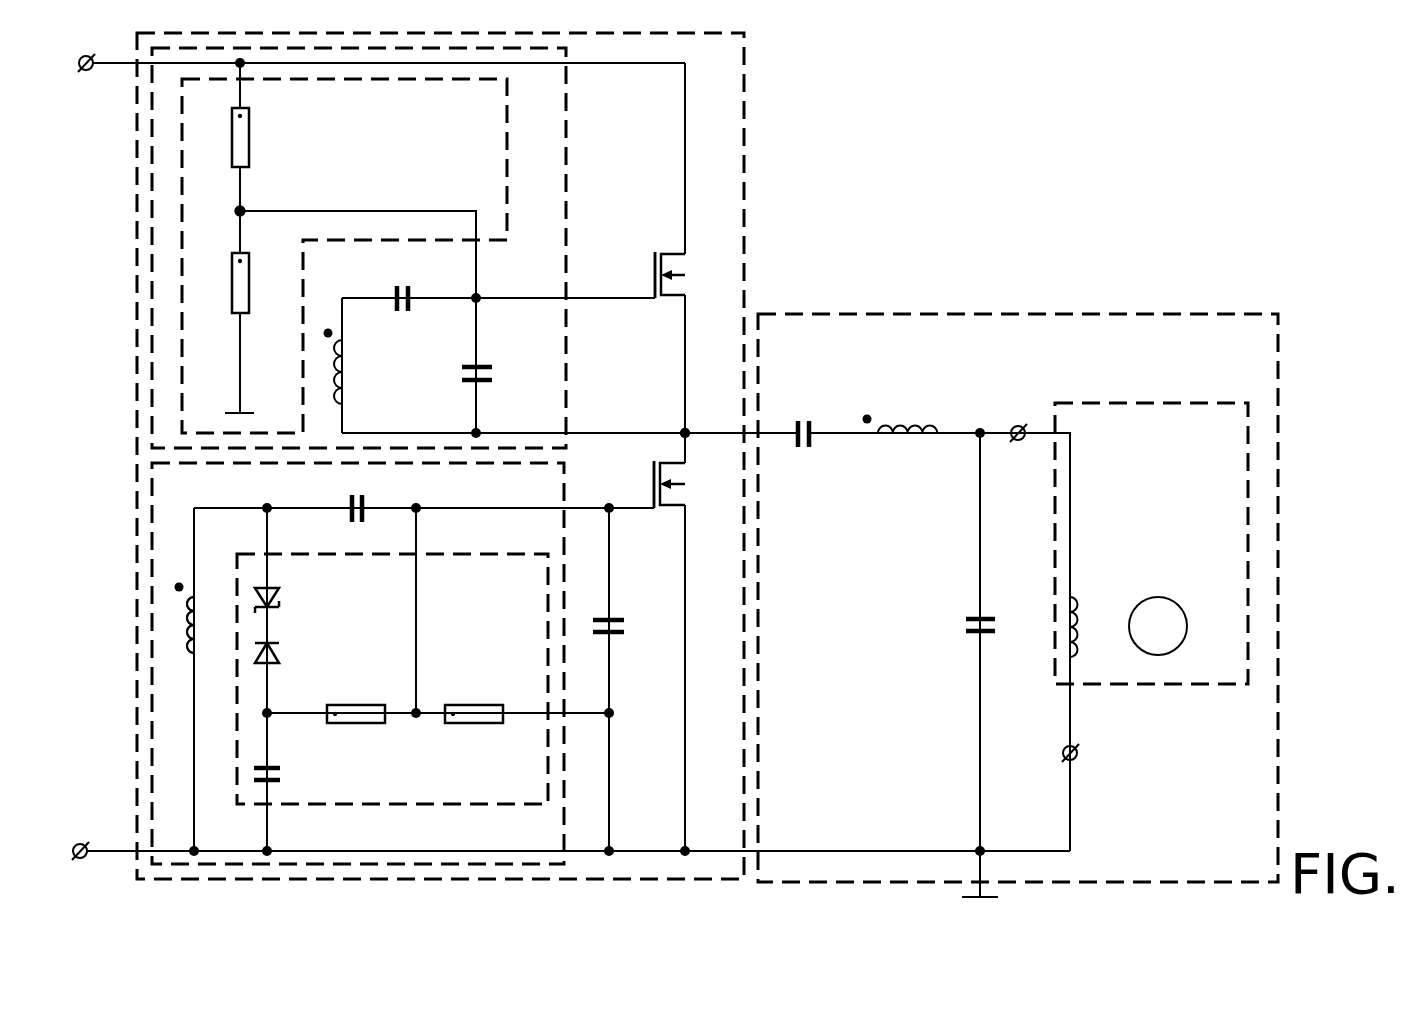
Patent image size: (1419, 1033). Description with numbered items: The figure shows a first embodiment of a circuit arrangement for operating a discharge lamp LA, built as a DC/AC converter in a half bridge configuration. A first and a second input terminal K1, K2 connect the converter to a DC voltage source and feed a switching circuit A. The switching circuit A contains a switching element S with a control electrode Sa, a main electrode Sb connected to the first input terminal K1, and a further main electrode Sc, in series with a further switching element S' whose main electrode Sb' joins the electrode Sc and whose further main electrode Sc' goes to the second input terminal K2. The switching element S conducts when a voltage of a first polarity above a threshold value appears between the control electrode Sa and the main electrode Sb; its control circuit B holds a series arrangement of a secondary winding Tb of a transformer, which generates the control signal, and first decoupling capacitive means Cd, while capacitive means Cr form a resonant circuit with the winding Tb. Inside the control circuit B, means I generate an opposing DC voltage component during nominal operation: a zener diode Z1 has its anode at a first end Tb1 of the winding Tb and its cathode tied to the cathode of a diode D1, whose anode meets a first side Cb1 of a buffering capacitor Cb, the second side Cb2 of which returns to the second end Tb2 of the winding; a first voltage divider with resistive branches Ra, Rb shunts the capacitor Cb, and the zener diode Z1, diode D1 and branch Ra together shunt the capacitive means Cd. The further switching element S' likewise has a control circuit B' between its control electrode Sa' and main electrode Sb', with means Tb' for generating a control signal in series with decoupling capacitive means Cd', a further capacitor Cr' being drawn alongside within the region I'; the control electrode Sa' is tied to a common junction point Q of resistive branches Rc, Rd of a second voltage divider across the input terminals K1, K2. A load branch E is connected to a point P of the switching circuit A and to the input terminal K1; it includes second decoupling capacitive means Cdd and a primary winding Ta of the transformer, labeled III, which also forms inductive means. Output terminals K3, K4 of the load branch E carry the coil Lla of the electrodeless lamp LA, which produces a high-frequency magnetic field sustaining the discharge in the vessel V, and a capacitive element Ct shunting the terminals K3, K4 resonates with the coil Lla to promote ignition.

The switching circuit A is at (747, 158).
The control circuit B' is at (325, 248).
The upper control circuit I' is at (298, 256).
The control circuit B is at (323, 663).
The means for generating a DC voltage component I is at (392, 659).
The load branch E is at (1033, 313).
The discharge lamp LA is at (1152, 402).
The second input terminal K2 is at (84, 74).
The first input terminal K1 is at (78, 840).
The output terminal K4 is at (1019, 425).
The output terminal K3 is at (1078, 754).
The first resistive branch of second voltage divider Rc is at (250, 131).
The second resistive branch of second voltage divider Rd is at (250, 281).
The first resistive branch of first voltage divider Ra is at (358, 704).
The second resistive branch of first voltage divider Rb is at (458, 704).
The common junction point Q is at (245, 208).
The first decoupling capacitive means Cd' is at (402, 328).
The capacitor Cr' is at (499, 381).
The first decoupling capacitive means Cd is at (328, 497).
The capacitive means Cr is at (631, 632).
The buffering capacitive element Cb is at (282, 774).
The first side of capacitor Cb1 is at (270, 736).
The second side of capacitor Cb2 is at (265, 829).
The second decoupling capacitive means Cdd is at (802, 418).
The capacitive element Ct is at (963, 623).
The means for generating a control signal Tb' is at (362, 365).
The secondary winding Tb is at (141, 618).
The first end of secondary winding Tb1 is at (200, 604).
The second end of secondary winding Tb2 is at (200, 648).
The primary winding Ta is at (902, 425).
The winding III is at (914, 440).
The coil Lla is at (1079, 600).
The discharge vessel V is at (1160, 600).
The zener diode Z1 is at (279, 598).
The diode D1 is at (279, 660).
The further switching element S' is at (740, 257).
The further main electrode Sc' is at (645, 158).
The control electrode Sa' is at (622, 274).
The main electrode Sb' is at (645, 364).
The point P is at (682, 431).
The switching element S is at (740, 519).
The further main electrode Sc is at (707, 460).
The control electrode Sa is at (622, 484).
The main electrode Sb is at (650, 678).